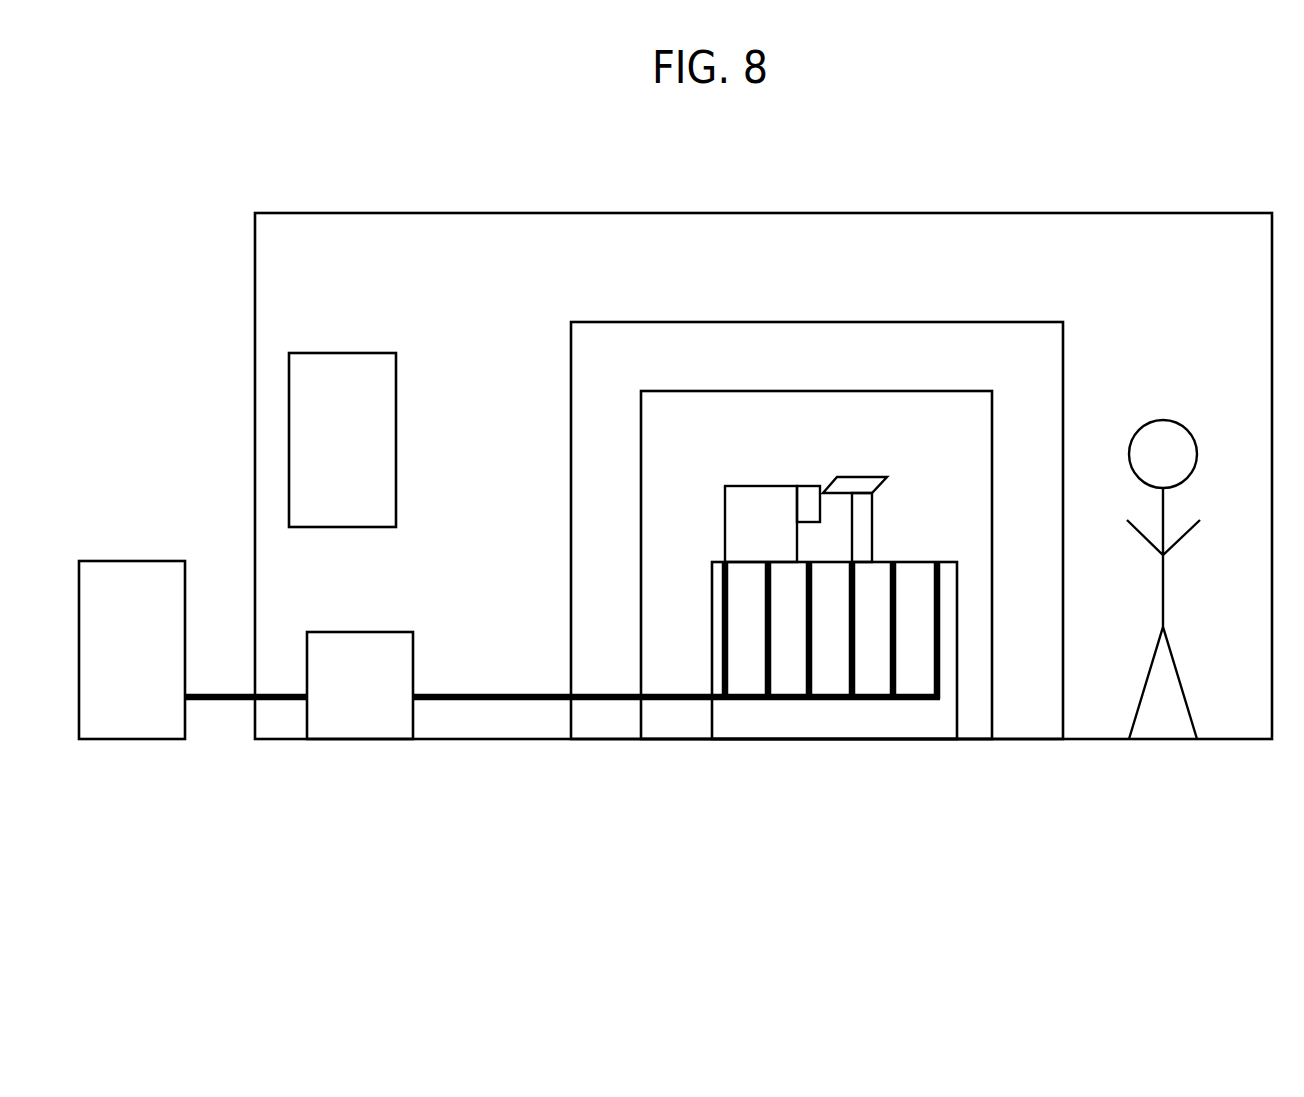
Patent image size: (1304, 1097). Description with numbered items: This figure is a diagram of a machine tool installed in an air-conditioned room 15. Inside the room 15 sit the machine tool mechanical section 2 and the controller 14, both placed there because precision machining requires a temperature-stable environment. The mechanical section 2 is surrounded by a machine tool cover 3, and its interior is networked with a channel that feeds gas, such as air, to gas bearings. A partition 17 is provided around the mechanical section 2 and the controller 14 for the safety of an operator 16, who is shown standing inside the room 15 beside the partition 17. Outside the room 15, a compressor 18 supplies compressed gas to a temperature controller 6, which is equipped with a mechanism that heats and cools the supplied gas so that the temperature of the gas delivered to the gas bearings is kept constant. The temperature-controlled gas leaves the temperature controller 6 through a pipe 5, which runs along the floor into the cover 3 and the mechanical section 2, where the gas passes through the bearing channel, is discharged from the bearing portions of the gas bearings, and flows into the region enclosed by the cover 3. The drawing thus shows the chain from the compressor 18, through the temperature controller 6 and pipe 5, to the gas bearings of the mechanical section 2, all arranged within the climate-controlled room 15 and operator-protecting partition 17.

The machine tool mechanical section 2 is at (852, 727).
The machine tool cover 3 is at (703, 387).
The pipe 5 is at (610, 704).
The temperature controller 6 is at (360, 744).
The controller 14 is at (322, 350).
The air-conditioned room 15 is at (575, 210).
The operator 16 is at (1161, 720).
The partition 17 is at (703, 319).
The compressor 18 is at (138, 655).